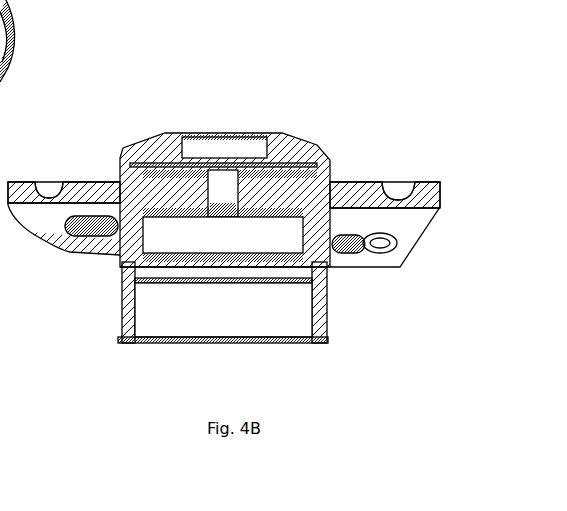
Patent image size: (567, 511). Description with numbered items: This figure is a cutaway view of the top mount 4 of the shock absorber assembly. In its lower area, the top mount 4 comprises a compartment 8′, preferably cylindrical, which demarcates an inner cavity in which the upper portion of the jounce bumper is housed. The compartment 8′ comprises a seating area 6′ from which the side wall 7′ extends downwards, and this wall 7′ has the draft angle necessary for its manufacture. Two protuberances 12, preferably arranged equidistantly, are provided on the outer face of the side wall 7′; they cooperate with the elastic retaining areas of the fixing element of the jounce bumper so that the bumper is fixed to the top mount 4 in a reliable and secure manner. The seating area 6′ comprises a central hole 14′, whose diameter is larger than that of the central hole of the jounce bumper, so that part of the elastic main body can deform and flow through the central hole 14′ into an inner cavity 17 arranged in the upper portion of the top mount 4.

The top mount 4 is at (224, 230).
The inner cavity 17 is at (282, 239).
The compartment 8′ is at (235, 315).
The central hole 14′ is at (238, 268).
The seating area 6′ is at (176, 266).
The side wall 7′ is at (325, 311).
The protuberance 12 is at (120, 341).